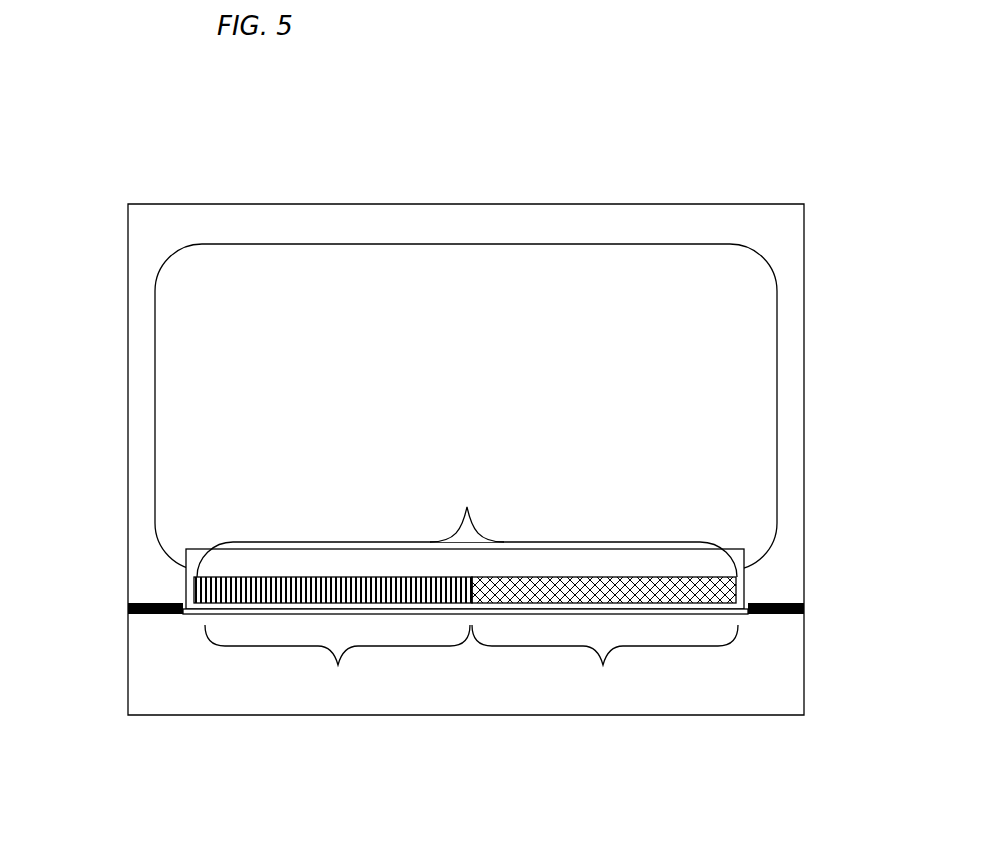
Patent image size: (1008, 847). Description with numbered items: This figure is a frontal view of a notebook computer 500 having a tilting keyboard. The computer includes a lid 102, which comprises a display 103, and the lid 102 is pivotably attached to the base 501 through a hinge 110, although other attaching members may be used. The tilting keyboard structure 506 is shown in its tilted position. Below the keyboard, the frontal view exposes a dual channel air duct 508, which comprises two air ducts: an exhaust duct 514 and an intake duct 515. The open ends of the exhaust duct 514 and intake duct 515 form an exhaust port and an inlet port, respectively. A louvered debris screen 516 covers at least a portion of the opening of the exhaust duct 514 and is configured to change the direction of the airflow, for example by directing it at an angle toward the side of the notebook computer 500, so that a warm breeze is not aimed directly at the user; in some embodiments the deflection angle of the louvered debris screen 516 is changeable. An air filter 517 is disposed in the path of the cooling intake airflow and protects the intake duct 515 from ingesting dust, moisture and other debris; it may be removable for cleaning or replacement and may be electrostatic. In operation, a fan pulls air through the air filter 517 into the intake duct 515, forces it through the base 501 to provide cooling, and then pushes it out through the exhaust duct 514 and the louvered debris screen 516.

The notebook computer 500 is at (197, 168).
The lid 102 is at (693, 228).
The display 103 is at (516, 282).
The hinge 110 is at (128, 612).
The base 501 is at (178, 690).
The tilting keyboard structure 506 is at (244, 562).
The dual channel air duct 508 is at (467, 511).
The exhaust duct 514 is at (337, 658).
The intake duct 515 is at (605, 658).
The louvered debris screen 516 is at (205, 602).
The air filter 517 is at (720, 602).